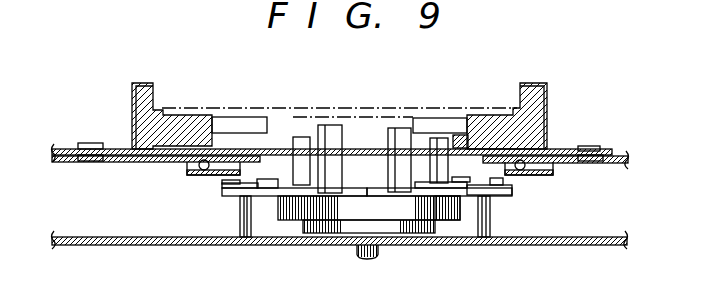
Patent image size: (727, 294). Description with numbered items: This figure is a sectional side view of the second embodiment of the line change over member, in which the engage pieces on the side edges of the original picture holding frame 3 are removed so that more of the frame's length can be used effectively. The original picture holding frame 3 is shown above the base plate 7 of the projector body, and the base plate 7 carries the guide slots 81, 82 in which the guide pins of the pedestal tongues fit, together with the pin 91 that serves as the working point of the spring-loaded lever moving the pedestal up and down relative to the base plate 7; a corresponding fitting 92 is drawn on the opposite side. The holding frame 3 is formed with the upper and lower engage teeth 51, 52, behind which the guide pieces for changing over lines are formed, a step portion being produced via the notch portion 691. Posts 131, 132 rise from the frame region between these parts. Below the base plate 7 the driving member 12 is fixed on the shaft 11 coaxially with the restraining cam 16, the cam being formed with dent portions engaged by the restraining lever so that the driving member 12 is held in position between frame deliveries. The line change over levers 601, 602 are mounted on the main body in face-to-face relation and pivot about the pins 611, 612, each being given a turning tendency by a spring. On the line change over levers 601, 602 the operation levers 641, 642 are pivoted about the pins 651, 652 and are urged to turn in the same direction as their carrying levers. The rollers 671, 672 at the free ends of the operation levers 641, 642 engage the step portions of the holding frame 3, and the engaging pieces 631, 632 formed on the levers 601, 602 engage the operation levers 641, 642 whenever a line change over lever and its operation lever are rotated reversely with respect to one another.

The original picture holding frame 3 is at (155, 108).
The base plate 7 is at (622, 163).
The shaft 11 is at (378, 250).
The driving member 12 is at (293, 212).
The restraining cam 16 is at (327, 227).
The upper engage tooth 51 is at (427, 122).
The lower engage tooth 52 is at (243, 118).
The guide slot 81 is at (611, 165).
The guide slot 82 is at (108, 160).
The pin 91 is at (594, 147).
The left clip 92 is at (95, 143).
The right post 131 is at (393, 128).
The left post 132 is at (332, 132).
The line change over lever 601 is at (493, 194).
The line change over lever 602 is at (232, 192).
The pin 611 is at (491, 220).
The pin 612 is at (237, 198).
The engaging piece 631 is at (462, 197).
The engaging piece 632 is at (267, 188).
The operation lever 641 is at (511, 189).
The operation lever 642 is at (220, 187).
The pin 651 is at (504, 181).
The pin 652 is at (235, 183).
The roller 671 is at (441, 146).
The roller 672 is at (302, 143).
The notch portion 691 is at (460, 134).